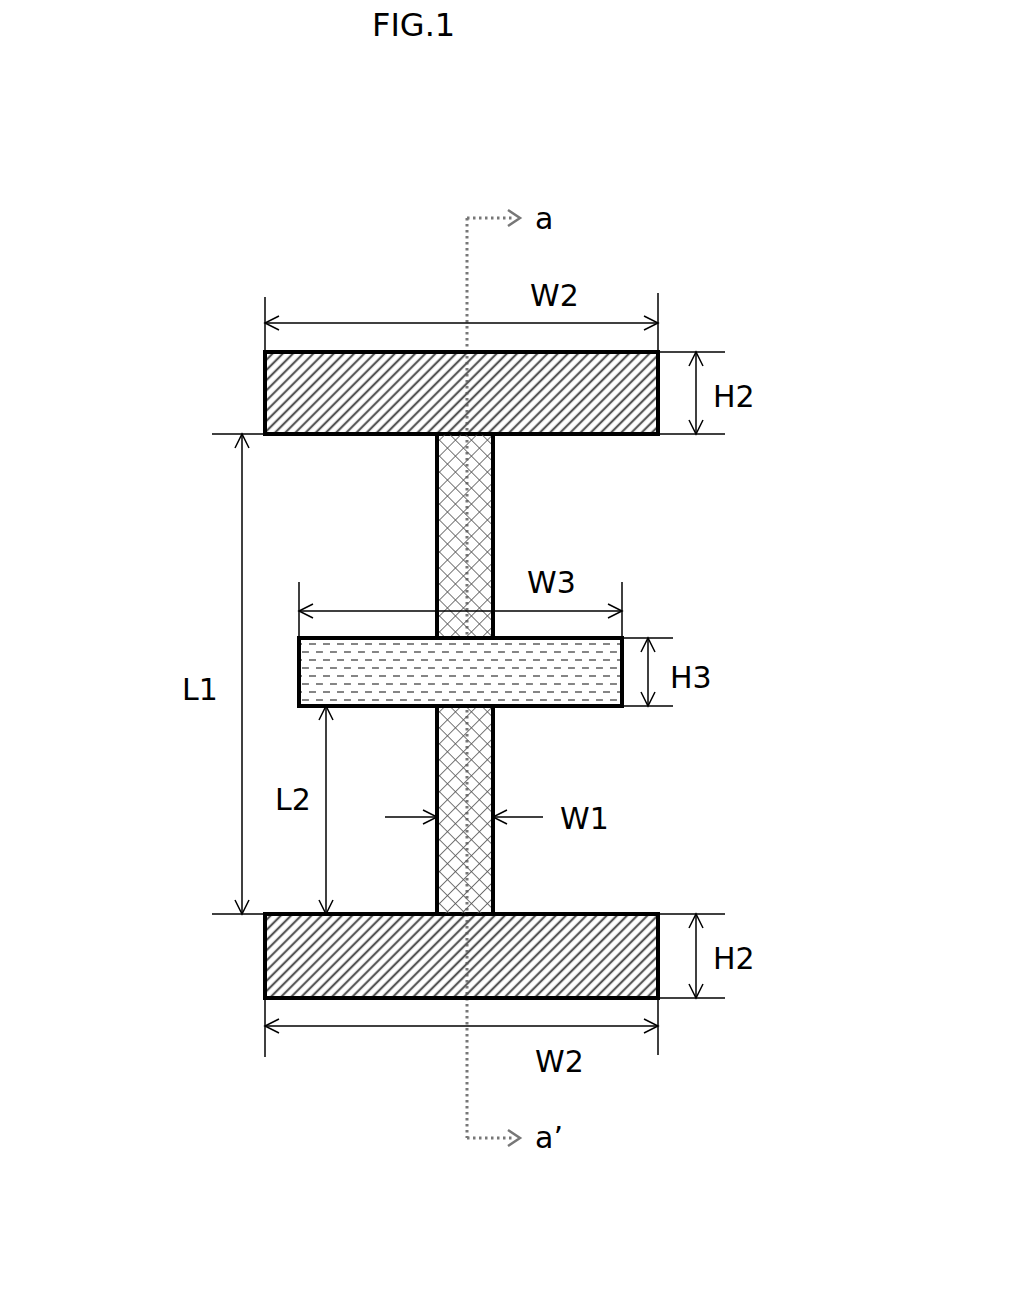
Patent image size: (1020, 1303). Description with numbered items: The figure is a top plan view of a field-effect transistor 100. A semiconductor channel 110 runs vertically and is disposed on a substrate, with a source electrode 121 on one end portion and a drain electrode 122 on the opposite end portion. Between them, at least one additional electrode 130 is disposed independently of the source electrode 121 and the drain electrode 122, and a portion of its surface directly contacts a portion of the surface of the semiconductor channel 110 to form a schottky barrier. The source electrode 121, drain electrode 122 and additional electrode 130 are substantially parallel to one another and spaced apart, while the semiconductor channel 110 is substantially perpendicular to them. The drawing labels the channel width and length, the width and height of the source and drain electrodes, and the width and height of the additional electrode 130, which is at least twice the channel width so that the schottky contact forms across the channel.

The field-effect transistor 100 is at (188, 252).
The semiconductor channel 110 is at (437, 537).
The source electrode 121 is at (263, 397).
The drain electrode 122 is at (265, 966).
The additional electrode 130 is at (299, 660).